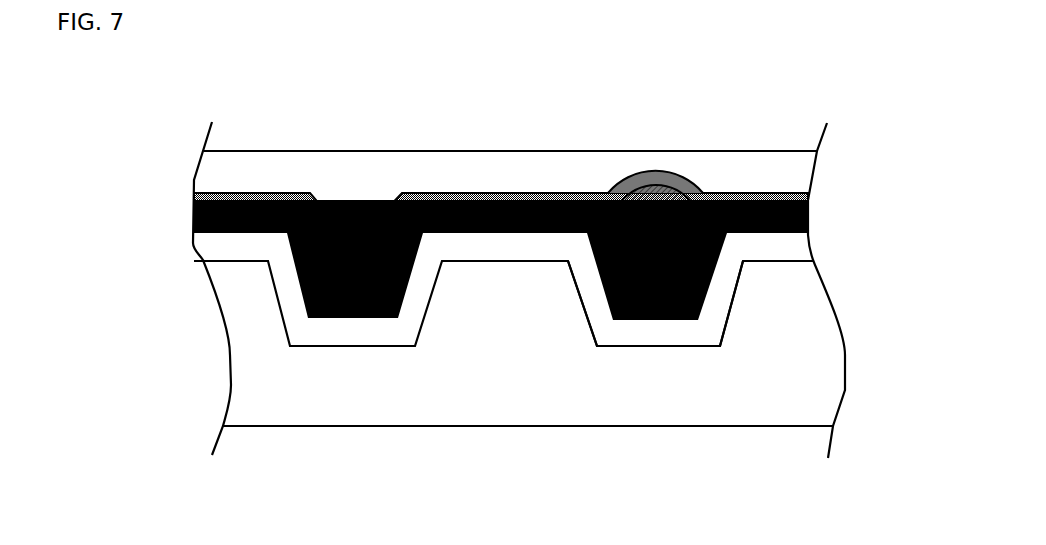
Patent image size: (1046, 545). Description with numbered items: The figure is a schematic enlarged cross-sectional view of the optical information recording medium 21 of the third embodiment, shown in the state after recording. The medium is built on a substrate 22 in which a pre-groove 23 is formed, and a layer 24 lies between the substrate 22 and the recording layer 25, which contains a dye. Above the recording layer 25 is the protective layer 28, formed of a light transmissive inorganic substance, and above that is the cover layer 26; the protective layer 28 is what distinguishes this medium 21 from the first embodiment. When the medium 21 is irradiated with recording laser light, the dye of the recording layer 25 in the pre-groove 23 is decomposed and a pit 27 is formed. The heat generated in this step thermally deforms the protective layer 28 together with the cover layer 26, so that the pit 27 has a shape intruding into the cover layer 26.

The optical information recording medium 21 is at (579, 269).
The substrate 22 is at (772, 355).
The pre-groove 23 is at (638, 347).
The insulating layer 24 is at (798, 248).
The recording layer 25 is at (810, 222).
The cover layer 26 is at (715, 165).
The pit 27 is at (640, 220).
The protective layer 28 is at (810, 197).